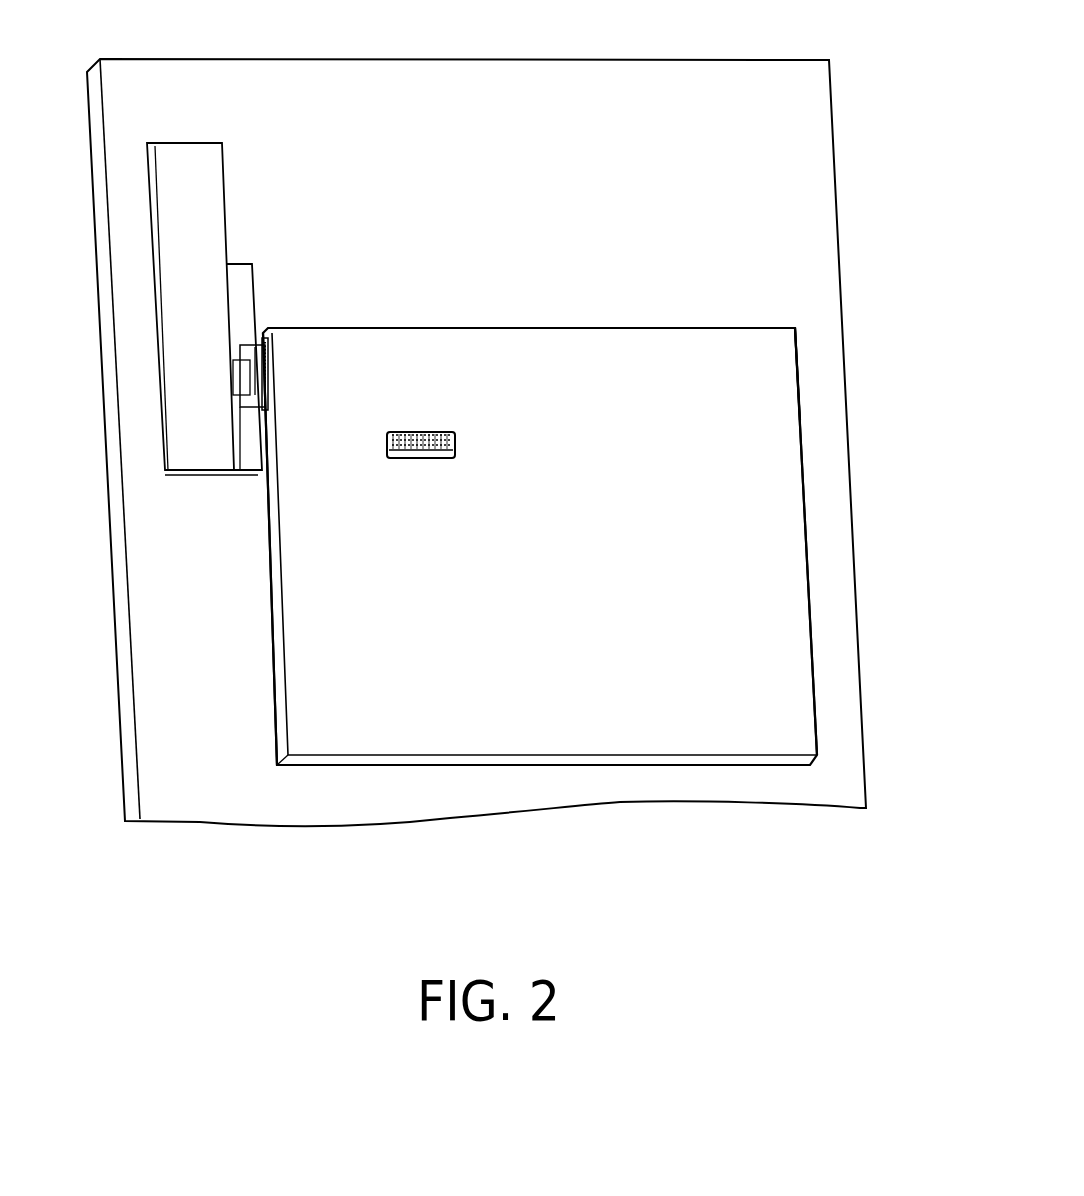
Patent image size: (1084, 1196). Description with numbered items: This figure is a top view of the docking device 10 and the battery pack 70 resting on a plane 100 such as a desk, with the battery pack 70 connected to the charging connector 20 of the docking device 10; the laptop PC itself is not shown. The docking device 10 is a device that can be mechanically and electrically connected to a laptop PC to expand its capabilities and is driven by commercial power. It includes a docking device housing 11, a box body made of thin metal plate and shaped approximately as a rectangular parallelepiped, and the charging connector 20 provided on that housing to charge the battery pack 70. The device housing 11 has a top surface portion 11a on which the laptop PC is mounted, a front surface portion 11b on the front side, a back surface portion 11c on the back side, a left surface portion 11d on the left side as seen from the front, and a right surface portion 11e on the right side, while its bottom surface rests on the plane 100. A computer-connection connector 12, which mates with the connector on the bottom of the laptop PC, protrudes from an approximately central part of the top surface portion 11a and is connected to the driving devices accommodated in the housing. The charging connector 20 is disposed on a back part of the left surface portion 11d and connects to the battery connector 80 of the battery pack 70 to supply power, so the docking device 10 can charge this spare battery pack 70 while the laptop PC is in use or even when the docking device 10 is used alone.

The plane 100 is at (608, 87).
The battery pack 70 is at (186, 167).
The battery connector 80 is at (237, 387).
The charging connector 20 is at (280, 373).
The docking device 10 is at (553, 550).
The docking device housing 11 is at (573, 330).
The top surface portion 11a is at (758, 393).
The front surface portion 11b is at (523, 762).
The back surface portion 11c is at (683, 328).
The left surface portion 11d is at (280, 692).
The right surface portion 11e is at (805, 508).
The computer-connection connector 12 is at (417, 460).